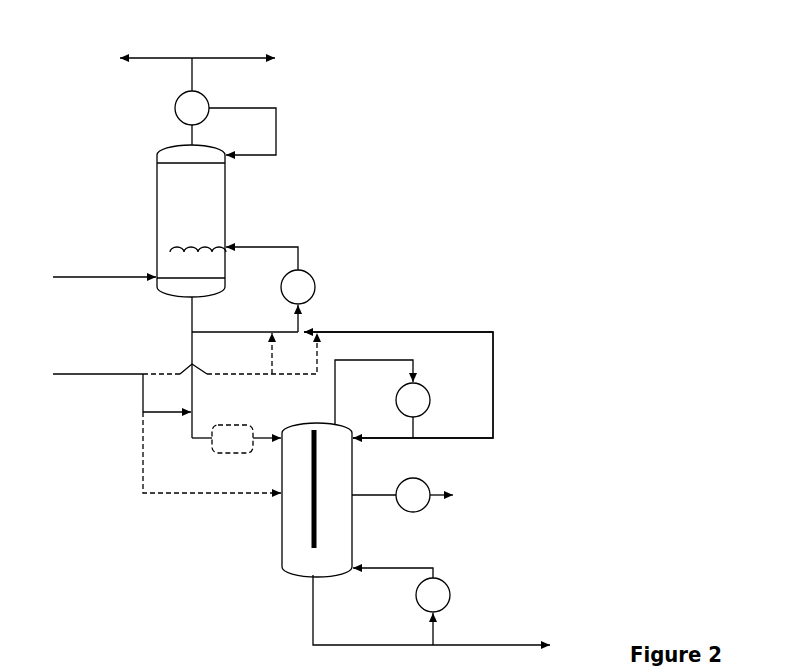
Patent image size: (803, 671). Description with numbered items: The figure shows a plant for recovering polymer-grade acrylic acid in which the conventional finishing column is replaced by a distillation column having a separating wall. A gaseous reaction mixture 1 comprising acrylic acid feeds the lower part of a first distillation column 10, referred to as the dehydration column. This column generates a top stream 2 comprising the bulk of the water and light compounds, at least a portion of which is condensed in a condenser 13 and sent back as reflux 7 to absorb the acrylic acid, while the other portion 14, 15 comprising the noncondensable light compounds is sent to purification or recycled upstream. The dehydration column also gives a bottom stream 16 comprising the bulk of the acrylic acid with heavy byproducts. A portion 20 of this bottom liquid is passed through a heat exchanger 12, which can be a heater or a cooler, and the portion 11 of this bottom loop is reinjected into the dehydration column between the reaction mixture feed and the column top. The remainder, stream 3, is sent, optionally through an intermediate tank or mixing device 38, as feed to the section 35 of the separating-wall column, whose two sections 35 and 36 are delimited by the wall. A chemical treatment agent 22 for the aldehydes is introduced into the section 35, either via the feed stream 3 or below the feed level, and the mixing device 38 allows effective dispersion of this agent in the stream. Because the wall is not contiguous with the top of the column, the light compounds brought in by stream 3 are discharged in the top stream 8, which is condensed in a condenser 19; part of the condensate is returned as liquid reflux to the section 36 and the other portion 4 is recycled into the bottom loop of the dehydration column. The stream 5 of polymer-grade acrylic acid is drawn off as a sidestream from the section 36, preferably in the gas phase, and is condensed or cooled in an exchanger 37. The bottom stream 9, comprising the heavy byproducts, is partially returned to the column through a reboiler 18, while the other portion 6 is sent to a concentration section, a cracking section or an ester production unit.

The gaseous reaction mixture 1 is at (104, 261).
The top stream 2 is at (182, 133).
The stream 3 is at (245, 353).
The liquid stream 4 is at (398, 372).
The sidestream 5 is at (402, 481).
The other portion 6 is at (491, 632).
The reflux 7 is at (256, 131).
The top stream 8 is at (363, 392).
The bottom stream 9 is at (363, 610).
The first distillation column 10 is at (191, 221).
The portion of the bottom loop 11 is at (275, 257).
The heat exchanger 12 is at (298, 301).
The condenser 13 is at (192, 91).
The other portion 14 is at (156, 42).
The other portion 15 is at (233, 42).
The bottom stream 16 is at (176, 367).
The reboiler 18 is at (401, 606).
The condenser 19 is at (413, 410).
The portion of the bottom liquid stream 20 is at (245, 319).
The chemical treatment agent 22 is at (149, 430).
The section 35 is at (317, 500).
The section 36 is at (330, 489).
The exchanger 37 is at (413, 495).
The intermediate tank 38 is at (236, 439).